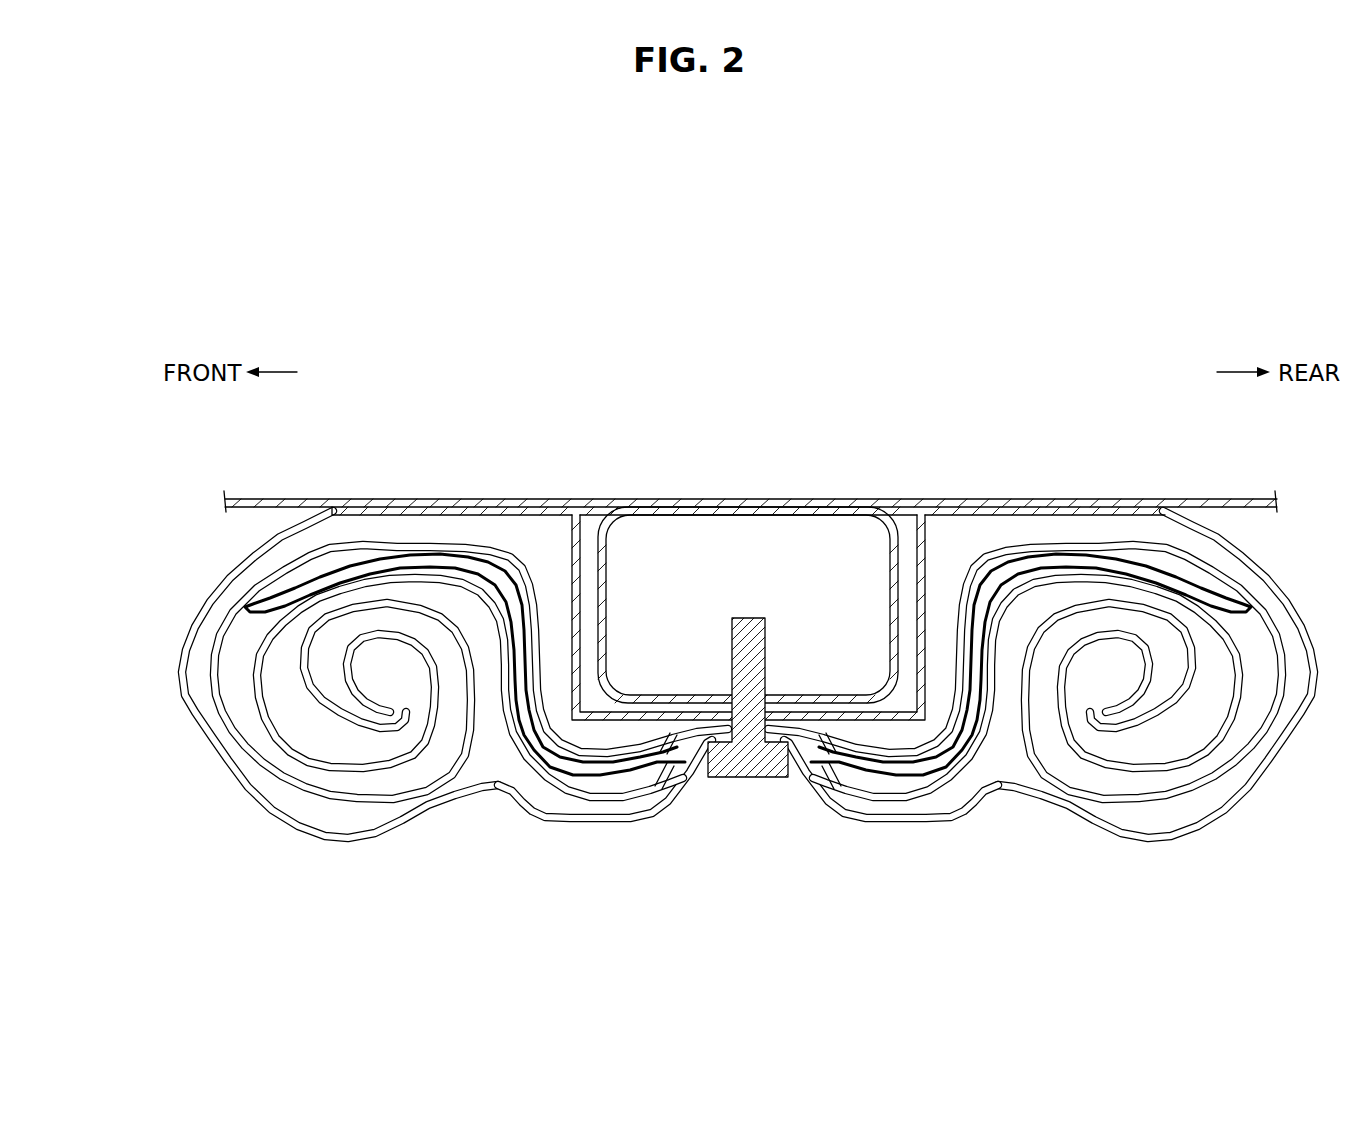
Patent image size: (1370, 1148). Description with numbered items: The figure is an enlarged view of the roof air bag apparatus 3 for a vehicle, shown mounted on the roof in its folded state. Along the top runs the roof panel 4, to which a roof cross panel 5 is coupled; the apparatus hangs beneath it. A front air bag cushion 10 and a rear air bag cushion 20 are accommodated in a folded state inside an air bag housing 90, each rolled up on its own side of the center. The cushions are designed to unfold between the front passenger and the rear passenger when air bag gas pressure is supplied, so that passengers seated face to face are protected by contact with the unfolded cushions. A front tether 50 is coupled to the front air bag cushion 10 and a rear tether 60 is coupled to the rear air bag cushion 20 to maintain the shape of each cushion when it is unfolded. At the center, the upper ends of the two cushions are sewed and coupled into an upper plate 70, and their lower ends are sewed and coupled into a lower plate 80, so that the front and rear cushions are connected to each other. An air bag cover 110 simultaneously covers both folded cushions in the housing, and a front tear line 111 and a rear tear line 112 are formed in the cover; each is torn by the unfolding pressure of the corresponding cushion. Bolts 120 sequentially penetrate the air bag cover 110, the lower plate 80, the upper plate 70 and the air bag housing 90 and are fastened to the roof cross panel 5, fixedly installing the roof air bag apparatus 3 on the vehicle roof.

The roof air bag apparatus 3 is at (1168, 843).
The roof panel 4 is at (1204, 499).
The roof cross panel 5 is at (608, 620).
The front air bag cushion 10 is at (277, 775).
The rear air bag cushion 20 is at (1219, 775).
The front tether 50 is at (512, 756).
The rear tether 60 is at (983, 756).
The upper plate 70 is at (790, 741).
The lower plate 80 is at (685, 772).
The air bag housing 90 is at (441, 527).
The air bag cover 110 is at (340, 840).
The front tear line 111 is at (553, 819).
The rear tear line 112 is at (945, 806).
The bolts 120 is at (755, 758).